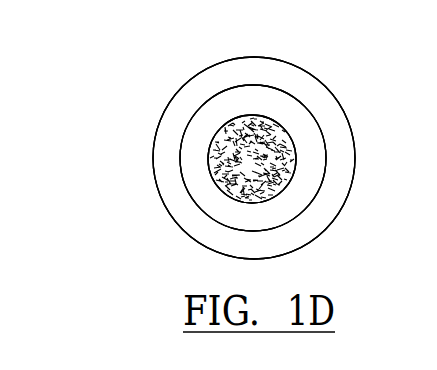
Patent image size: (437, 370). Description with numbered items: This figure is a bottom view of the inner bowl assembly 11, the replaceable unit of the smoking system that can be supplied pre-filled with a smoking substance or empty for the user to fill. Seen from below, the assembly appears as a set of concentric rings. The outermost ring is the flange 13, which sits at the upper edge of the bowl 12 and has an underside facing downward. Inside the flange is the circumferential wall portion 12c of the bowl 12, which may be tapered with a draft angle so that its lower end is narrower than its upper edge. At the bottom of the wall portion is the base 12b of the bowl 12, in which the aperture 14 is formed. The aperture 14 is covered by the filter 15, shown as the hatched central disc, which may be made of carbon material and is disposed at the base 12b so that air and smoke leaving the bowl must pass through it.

The inner bowl assembly 11 is at (138, 142).
The bowl 12 is at (327, 230).
The base 12b is at (273, 103).
The circumferential wall portion 12c is at (193, 200).
The flange 13 is at (202, 88).
The aperture 14 is at (290, 132).
The filter 15 is at (295, 178).